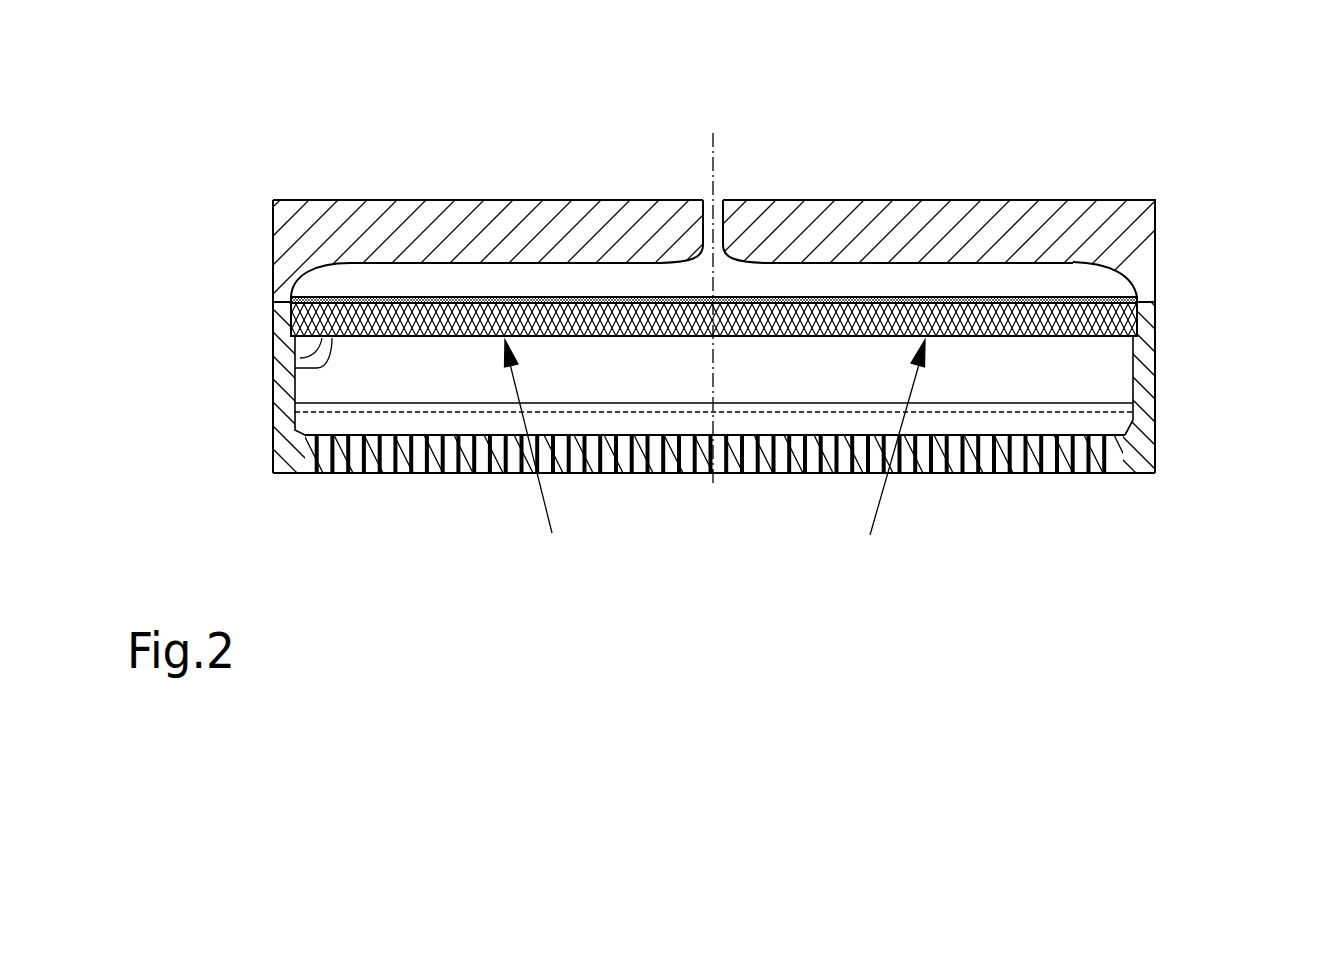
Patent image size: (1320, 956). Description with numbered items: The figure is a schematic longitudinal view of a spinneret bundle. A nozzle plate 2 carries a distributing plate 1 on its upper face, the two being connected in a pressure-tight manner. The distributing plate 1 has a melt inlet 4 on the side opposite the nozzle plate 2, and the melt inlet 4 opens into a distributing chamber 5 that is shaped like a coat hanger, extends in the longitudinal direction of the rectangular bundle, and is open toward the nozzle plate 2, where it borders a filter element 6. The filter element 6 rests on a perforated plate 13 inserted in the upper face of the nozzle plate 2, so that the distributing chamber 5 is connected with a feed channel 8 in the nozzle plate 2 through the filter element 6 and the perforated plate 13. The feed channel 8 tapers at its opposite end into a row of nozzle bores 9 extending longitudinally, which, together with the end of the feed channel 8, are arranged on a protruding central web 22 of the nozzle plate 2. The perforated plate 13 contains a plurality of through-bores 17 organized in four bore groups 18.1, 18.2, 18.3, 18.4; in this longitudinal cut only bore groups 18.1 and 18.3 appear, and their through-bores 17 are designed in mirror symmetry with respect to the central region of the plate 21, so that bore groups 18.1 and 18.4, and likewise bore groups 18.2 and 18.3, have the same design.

The distributing plate 1 is at (1073, 218).
The nozzle plate 2 is at (1137, 349).
The melt inlet 4 is at (723, 201).
The distributing chamber 5 is at (875, 275).
The filter element 6 is at (1100, 266).
The feed channel 8 is at (340, 378).
The nozzle bores 9 is at (380, 475).
The perforated plate 13 is at (282, 322).
The through-bores 17 is at (295, 368).
The bore group 18.1 is at (554, 460).
The bore group 18.2 is at (554, 460).
The bore group 18.3 is at (873, 460).
The bore group 18.4 is at (873, 460).
The central region of the plate 21 is at (712, 162).
The central web 22 is at (1140, 440).